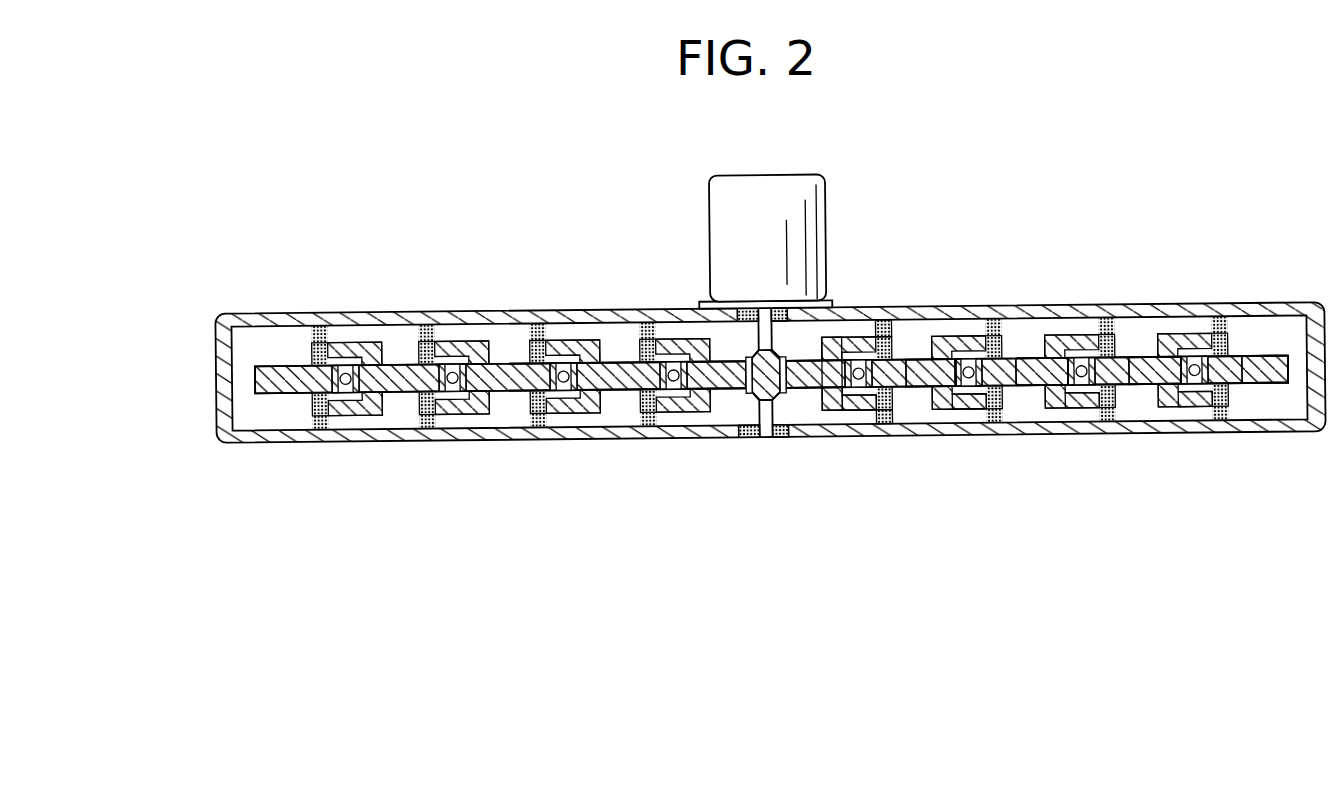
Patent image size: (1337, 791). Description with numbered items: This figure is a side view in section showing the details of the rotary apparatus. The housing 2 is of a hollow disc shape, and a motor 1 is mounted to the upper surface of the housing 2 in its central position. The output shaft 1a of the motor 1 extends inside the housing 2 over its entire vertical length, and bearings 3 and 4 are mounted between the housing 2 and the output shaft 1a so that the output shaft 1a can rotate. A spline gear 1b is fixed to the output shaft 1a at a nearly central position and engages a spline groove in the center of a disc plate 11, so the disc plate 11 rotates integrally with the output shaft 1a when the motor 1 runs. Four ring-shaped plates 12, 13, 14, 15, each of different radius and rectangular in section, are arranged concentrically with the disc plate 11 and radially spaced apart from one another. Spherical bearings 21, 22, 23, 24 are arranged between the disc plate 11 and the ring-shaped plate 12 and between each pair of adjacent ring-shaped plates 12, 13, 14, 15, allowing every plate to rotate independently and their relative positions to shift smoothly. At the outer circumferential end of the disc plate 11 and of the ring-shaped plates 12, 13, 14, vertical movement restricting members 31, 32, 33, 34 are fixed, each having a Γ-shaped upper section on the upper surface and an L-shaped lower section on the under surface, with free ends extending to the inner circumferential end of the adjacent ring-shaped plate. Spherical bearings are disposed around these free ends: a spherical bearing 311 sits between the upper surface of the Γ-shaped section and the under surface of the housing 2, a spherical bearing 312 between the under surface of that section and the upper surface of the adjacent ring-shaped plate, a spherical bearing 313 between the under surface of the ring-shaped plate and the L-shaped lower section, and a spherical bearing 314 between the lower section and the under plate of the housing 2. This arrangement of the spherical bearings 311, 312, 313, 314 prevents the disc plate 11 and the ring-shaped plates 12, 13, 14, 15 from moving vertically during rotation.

The motor 1 is at (787, 192).
The output shaft 1a is at (757, 438).
The spline gear 1b is at (746, 360).
The housing 2 is at (497, 317).
The bearing 3 is at (740, 436).
The bearing 4 is at (790, 305).
The disc plate 11 is at (810, 375).
The ring-shaped plate 12 is at (920, 388).
The ring-shaped plate 13 is at (1030, 388).
The ring-shaped plate 14 is at (1135, 388).
The ring-shaped plate 15 is at (1260, 388).
The spherical bearing 21 is at (857, 402).
The spherical bearing 22 is at (962, 405).
The spherical bearing 23 is at (1070, 405).
The spherical bearing 24 is at (1185, 405).
The vertical movement restricting member 31 is at (857, 338).
The vertical movement restricting member 32 is at (965, 337).
The vertical movement restricting member 33 is at (1060, 337).
The vertical movement restricting member 34 is at (1165, 337).
The spherical bearing 311 is at (884, 330).
The spherical bearing 312 is at (868, 360).
The spherical bearing 313 is at (888, 422).
The spherical bearing 314 is at (876, 412).